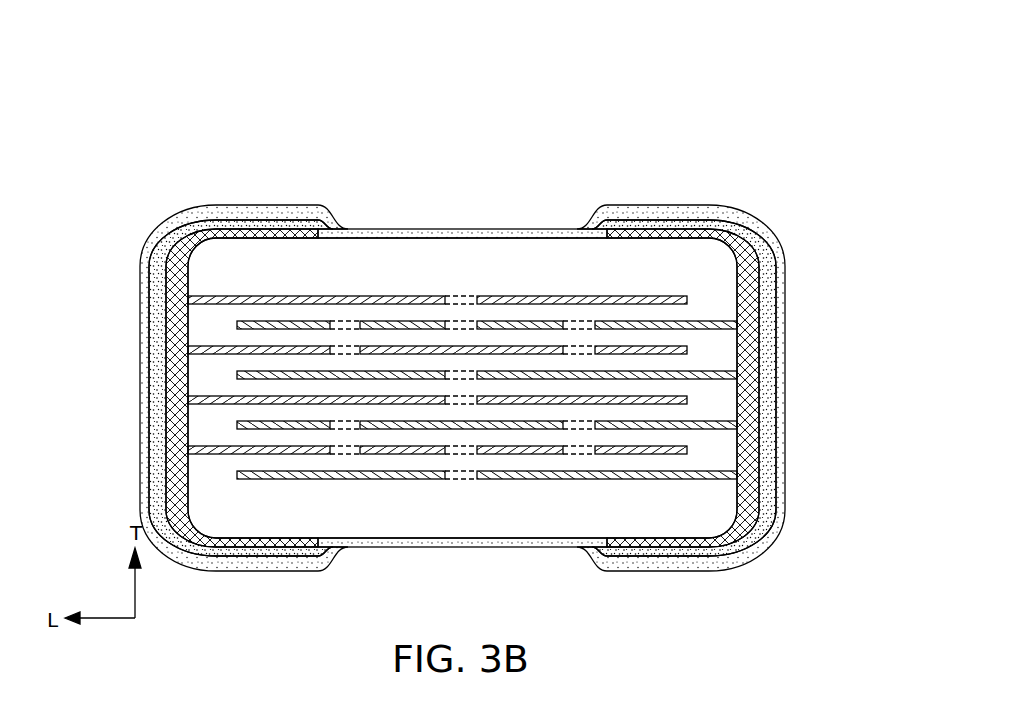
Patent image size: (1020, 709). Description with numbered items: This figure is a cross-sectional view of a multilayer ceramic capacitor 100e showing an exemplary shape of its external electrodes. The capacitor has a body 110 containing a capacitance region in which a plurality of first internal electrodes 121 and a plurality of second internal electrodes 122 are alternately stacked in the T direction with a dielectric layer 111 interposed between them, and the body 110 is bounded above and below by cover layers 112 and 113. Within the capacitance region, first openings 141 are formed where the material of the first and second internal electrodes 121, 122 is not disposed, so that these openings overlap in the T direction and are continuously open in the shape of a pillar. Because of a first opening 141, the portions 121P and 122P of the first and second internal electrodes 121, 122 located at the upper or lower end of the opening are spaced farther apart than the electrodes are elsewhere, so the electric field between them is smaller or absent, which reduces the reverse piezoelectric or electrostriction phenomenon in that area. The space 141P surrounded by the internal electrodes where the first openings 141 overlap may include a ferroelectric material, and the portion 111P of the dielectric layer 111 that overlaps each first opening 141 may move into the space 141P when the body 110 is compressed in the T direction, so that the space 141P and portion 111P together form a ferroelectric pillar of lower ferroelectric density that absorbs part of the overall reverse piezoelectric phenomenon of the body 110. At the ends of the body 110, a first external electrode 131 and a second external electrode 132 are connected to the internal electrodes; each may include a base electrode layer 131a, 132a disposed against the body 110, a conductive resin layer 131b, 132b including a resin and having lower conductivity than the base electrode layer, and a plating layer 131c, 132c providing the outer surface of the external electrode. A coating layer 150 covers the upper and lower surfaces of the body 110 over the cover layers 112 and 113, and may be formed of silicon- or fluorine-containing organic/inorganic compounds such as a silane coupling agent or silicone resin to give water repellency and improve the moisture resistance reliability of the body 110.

The multilayer ceramic capacitor 100e is at (478, 102).
The body 110 is at (568, 227).
The dielectric layer 111 is at (528, 312).
The portion of the dielectric layer overlapping the first opening 111P is at (345, 338).
The cover layer 112 is at (338, 265).
The cover layer 113 is at (410, 523).
The first internal electrode 121 is at (407, 300).
The portion of the first internal electrode located at an end of the first opening 121P is at (357, 333).
The second internal electrode 122 is at (487, 322).
The portion of the second internal electrode located at an end of the first opening 122P is at (347, 372).
The first external electrode 131 is at (200, 299).
The base electrode layer 131a is at (165, 356).
The conductive resin layer 131b is at (153, 388).
The plating layer 131c is at (142, 418).
The second external electrode 132 is at (725, 299).
The base electrode layer 132a is at (760, 356).
The conductive resin layer 132b is at (772, 388).
The plating layer 132c is at (783, 418).
The first opening 141 is at (380, 273).
The space 141P is at (345, 370).
The coating layer 150 is at (520, 540).